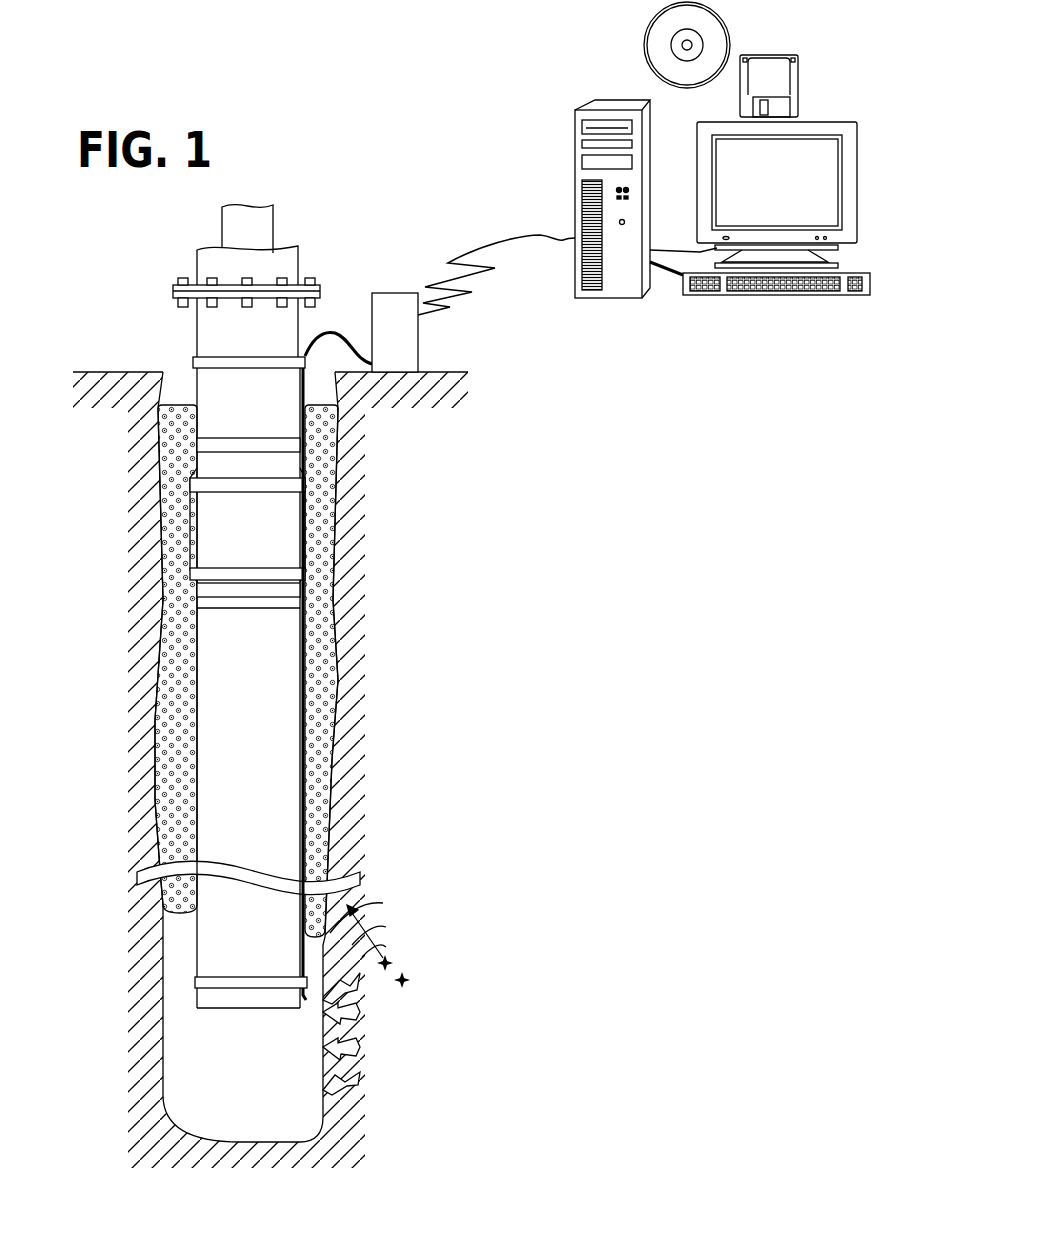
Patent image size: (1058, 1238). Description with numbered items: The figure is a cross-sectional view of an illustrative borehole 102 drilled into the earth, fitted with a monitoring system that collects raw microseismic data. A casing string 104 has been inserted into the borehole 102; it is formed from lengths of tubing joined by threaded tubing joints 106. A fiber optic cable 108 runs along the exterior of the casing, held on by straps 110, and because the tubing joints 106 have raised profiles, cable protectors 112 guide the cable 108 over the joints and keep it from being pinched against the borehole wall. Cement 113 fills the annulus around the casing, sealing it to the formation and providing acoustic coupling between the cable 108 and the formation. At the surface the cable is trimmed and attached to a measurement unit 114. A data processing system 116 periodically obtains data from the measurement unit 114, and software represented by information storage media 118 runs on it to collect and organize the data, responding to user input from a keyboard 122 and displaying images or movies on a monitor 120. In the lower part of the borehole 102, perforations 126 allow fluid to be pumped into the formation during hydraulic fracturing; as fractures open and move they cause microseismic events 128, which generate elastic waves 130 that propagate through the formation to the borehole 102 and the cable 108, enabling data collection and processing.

The borehole 102 is at (340, 472).
The casing string 104 is at (195, 335).
The threaded tubing joint 106 is at (285, 547).
The fiber optic cable 108 is at (335, 333).
The strap 110 is at (230, 355).
The cable protector 112 is at (307, 522).
The cement 113 is at (323, 773).
The measurement unit 114 is at (422, 345).
The data processing system 116 is at (650, 218).
The information storage media 118 is at (752, 55).
The monitor 120 is at (847, 245).
The keyboard 122 is at (847, 295).
The perforations 126 is at (365, 973).
The microseismic events 128 is at (405, 978).
The elastic waves 130 is at (367, 928).